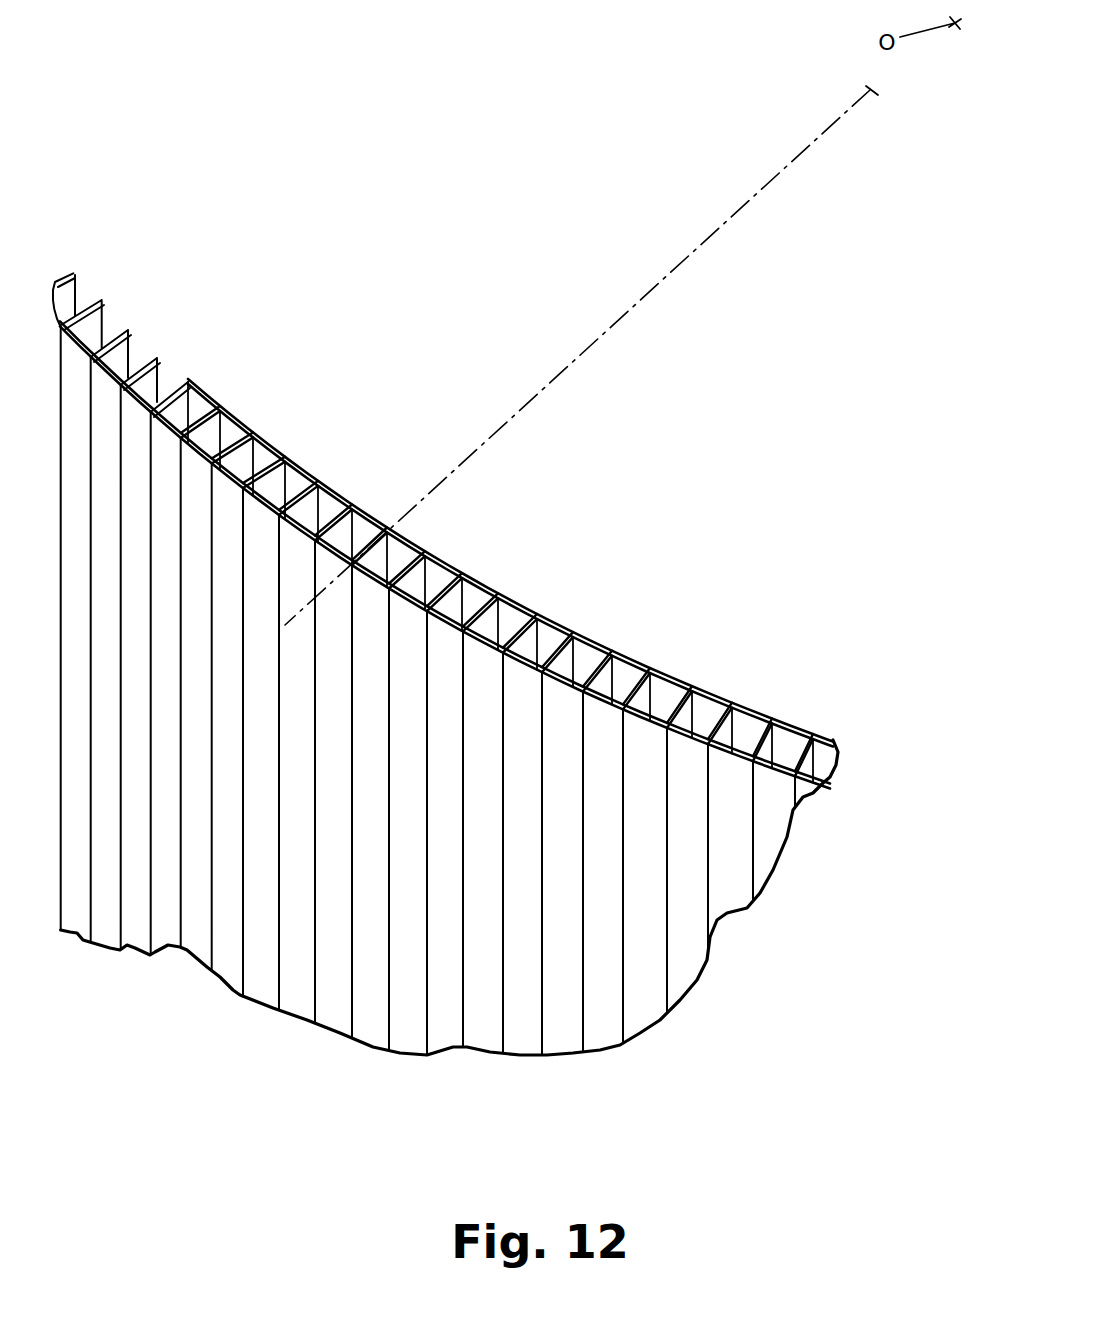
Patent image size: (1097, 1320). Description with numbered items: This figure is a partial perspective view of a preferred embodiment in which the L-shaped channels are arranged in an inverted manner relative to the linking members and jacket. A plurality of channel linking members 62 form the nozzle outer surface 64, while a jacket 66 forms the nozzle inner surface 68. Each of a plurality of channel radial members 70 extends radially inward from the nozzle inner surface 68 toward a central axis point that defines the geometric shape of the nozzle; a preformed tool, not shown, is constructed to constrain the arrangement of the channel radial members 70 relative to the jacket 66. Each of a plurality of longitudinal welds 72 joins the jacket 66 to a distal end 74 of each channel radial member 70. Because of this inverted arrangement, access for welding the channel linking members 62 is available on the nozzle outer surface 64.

The channel linking members 62 is at (603, 1015).
The nozzle outer surface 64 is at (263, 982).
The jacket 66 is at (270, 452).
The nozzle inner surface 68 is at (487, 586).
The channel radial members 70 is at (717, 702).
The longitudinal welds 72 is at (388, 922).
The distal end 74 is at (130, 337).